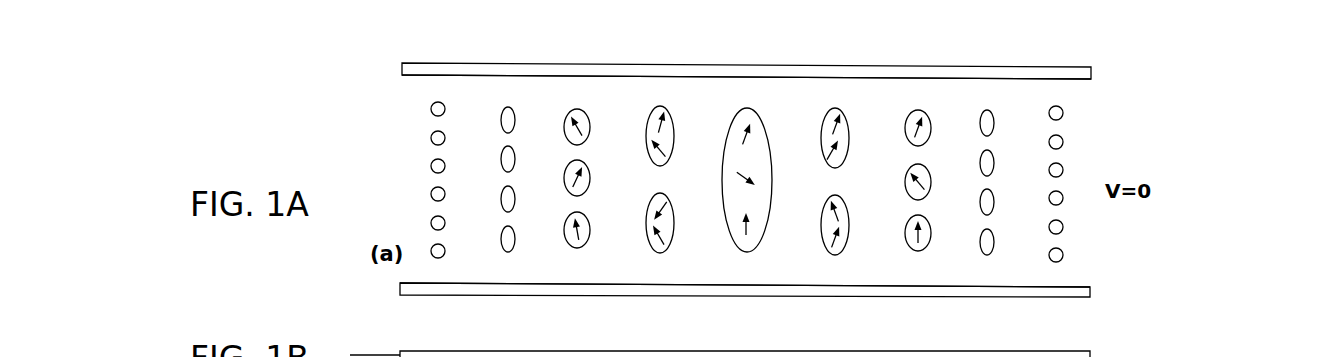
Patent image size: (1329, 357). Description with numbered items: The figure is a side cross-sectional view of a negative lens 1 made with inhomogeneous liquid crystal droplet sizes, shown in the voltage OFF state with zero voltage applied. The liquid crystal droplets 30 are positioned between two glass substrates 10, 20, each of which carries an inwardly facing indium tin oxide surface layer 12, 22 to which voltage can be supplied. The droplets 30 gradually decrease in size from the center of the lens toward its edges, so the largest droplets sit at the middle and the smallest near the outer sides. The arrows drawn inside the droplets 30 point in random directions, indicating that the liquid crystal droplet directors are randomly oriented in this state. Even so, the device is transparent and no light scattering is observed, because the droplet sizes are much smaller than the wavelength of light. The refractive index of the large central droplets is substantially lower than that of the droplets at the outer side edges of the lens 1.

The negative lens 1 is at (1228, 136).
The glass substrate 10 is at (799, 60).
The indium tin oxide surface layer 12 is at (803, 98).
The glass substrate 20 is at (820, 317).
The indium tin oxide surface layer 22 is at (799, 263).
The droplets 30 is at (370, 153).